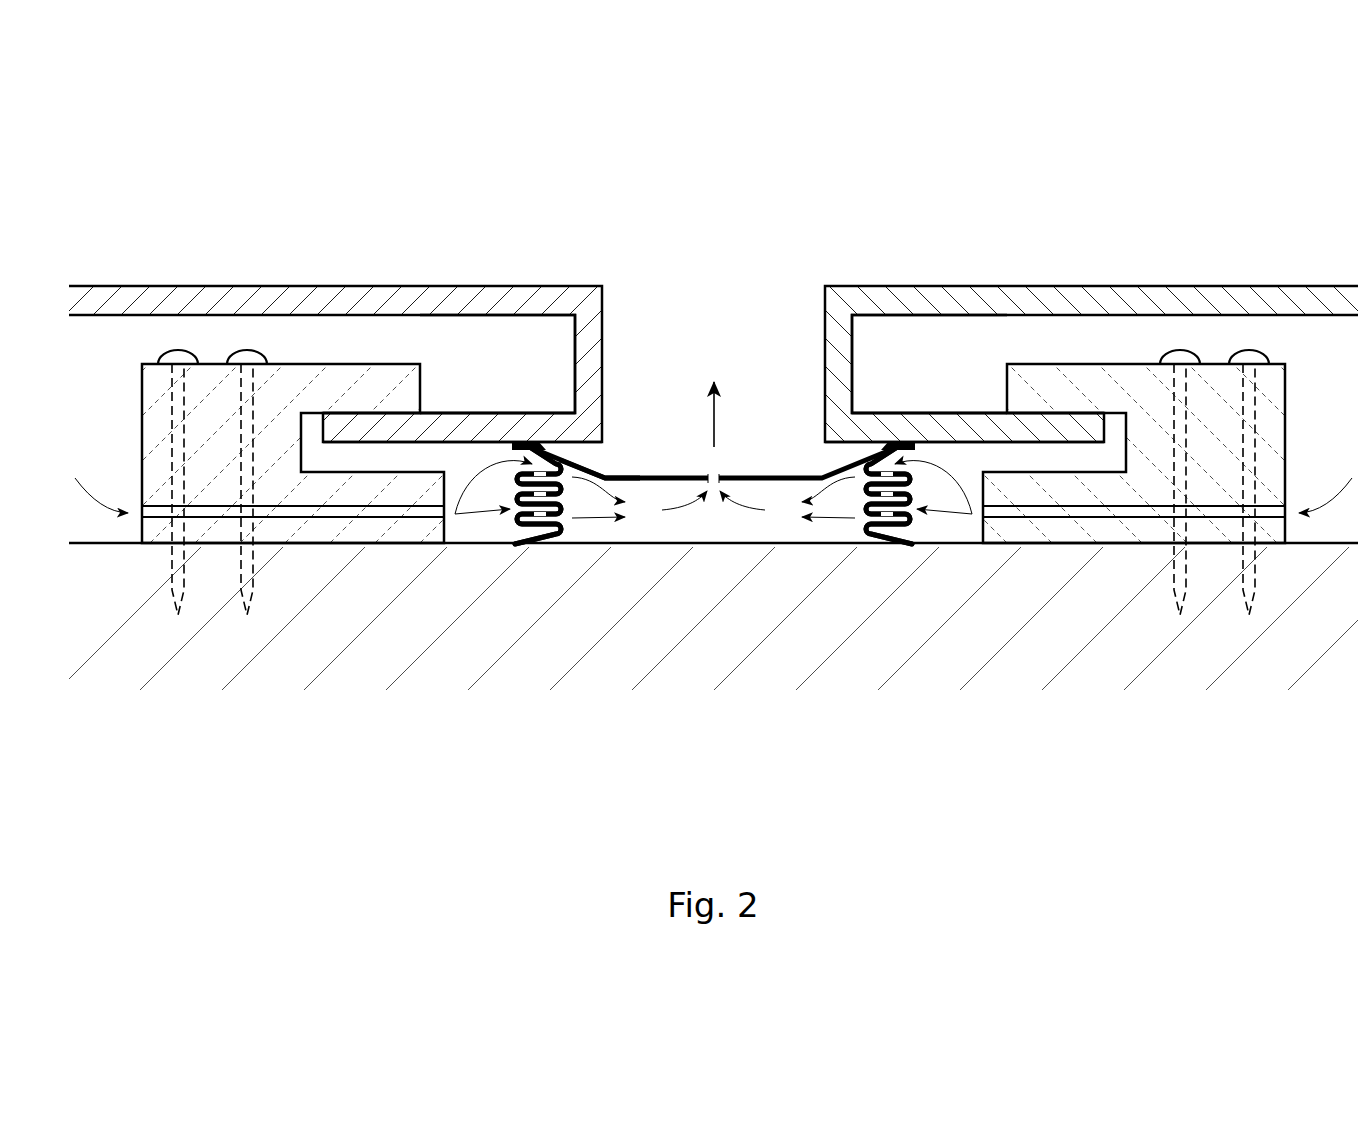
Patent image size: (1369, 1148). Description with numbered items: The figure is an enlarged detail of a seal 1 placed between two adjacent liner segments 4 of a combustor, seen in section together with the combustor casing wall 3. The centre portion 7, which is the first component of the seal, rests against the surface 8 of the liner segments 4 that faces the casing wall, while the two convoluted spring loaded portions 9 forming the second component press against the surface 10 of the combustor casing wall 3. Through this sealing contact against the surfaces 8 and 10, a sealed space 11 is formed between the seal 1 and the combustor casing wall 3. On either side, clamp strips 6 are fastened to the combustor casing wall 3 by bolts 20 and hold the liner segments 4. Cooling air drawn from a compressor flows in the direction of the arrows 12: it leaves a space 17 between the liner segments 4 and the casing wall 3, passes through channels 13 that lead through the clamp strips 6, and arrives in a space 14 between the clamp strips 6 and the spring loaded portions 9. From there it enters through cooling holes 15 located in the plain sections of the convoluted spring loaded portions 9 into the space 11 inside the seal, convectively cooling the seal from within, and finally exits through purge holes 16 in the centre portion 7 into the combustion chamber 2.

The seal 1 is at (754, 472).
The combustion chamber 2 is at (759, 124).
The combustor casing wall 3 is at (763, 625).
The liner segment 4 is at (222, 300).
The clamp strip 6 is at (210, 450).
The centre portion 7 is at (632, 472).
The surface of the liner segments 8 is at (385, 445).
The spring loaded portion 9 is at (510, 522).
The surface of the combustor casing wall 10 is at (645, 549).
The sealed space 11 is at (728, 521).
The arrows 12 is at (710, 413).
The channel 13 is at (322, 513).
The space 14 is at (463, 380).
The cooling hole 15 is at (540, 520).
The purge hole 16 is at (714, 485).
The space 17 is at (72, 419).
The bolt 20 is at (1249, 348).